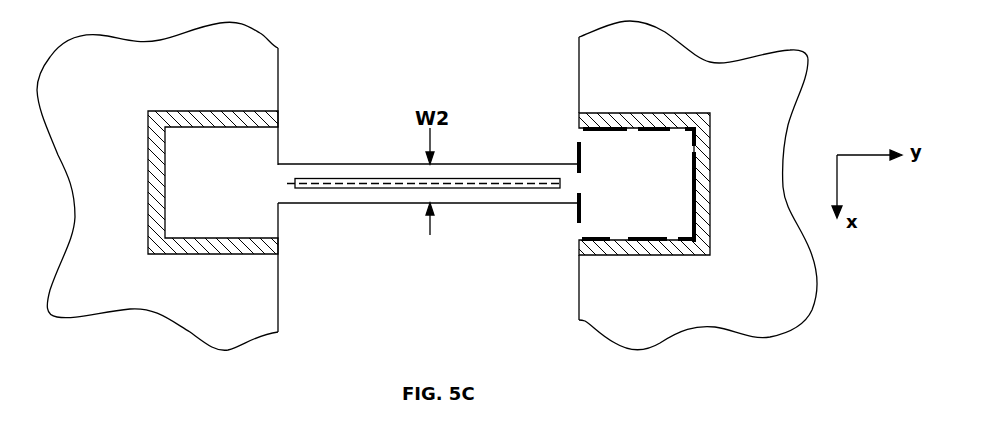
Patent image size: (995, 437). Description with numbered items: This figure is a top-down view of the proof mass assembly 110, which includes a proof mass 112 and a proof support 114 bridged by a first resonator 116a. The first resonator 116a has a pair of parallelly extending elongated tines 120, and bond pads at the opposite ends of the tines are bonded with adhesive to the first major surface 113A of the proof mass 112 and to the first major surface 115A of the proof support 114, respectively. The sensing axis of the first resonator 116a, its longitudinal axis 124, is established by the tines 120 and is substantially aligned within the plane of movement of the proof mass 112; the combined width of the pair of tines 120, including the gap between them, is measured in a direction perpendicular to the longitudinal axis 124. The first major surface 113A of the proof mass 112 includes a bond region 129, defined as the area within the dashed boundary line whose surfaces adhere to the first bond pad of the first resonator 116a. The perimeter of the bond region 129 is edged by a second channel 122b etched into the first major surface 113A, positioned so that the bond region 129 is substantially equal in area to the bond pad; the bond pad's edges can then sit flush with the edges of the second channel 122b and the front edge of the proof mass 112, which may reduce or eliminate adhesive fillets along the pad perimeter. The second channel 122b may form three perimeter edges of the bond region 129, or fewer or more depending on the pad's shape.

The proof mass assembly 110 is at (328, 52).
The proof mass 112 is at (693, 104).
The first major surface of proof mass 113A is at (698, 193).
The proof support 114 is at (157, 119).
The first major surface of proof support 115A is at (162, 199).
The first resonator 116a is at (294, 164).
The elongated tines 120 is at (332, 172).
The second channel 122b is at (678, 114).
The longitudinal axis 124 is at (495, 183).
The bond region 129 is at (641, 128).